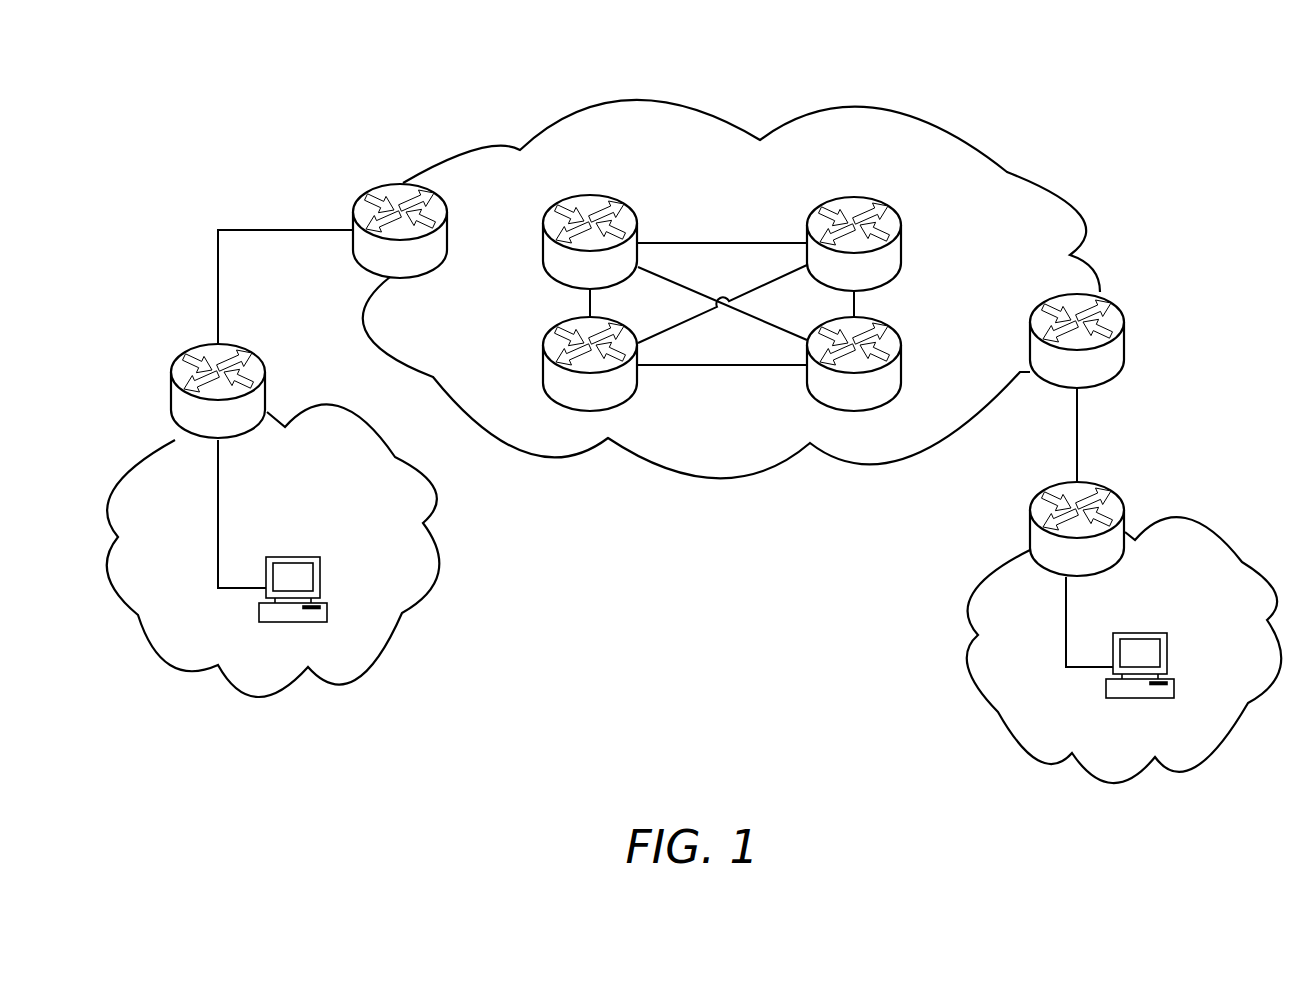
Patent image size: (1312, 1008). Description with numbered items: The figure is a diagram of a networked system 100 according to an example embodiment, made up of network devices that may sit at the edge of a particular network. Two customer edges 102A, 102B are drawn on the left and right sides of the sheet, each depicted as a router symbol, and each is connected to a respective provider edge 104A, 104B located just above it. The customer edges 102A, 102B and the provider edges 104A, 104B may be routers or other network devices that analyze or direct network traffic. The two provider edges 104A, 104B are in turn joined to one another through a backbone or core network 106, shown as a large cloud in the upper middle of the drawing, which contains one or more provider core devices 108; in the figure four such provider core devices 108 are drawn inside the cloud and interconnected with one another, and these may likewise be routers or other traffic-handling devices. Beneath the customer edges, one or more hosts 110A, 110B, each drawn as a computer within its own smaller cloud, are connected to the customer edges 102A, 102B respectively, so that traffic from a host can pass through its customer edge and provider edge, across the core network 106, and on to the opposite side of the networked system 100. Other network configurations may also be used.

The networked system 100 is at (1071, 66).
The customer edge 102A is at (258, 350).
The customer edge 102B is at (1117, 495).
The provider edge 104A is at (440, 200).
The provider edge 104B is at (1120, 310).
The core network 106 is at (680, 103).
The provider core device 108 is at (627, 202).
The host 110A is at (310, 557).
The host 110B is at (1158, 633).